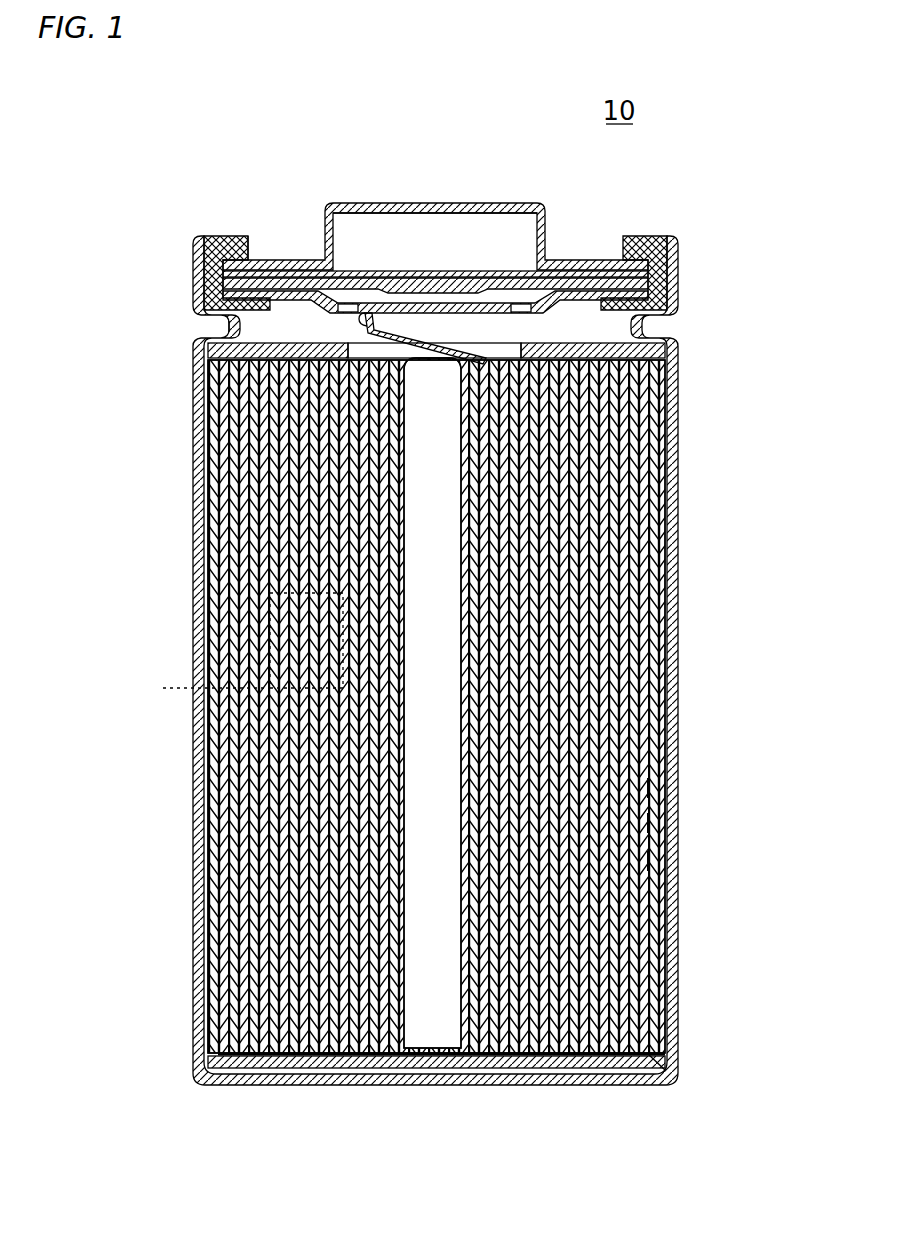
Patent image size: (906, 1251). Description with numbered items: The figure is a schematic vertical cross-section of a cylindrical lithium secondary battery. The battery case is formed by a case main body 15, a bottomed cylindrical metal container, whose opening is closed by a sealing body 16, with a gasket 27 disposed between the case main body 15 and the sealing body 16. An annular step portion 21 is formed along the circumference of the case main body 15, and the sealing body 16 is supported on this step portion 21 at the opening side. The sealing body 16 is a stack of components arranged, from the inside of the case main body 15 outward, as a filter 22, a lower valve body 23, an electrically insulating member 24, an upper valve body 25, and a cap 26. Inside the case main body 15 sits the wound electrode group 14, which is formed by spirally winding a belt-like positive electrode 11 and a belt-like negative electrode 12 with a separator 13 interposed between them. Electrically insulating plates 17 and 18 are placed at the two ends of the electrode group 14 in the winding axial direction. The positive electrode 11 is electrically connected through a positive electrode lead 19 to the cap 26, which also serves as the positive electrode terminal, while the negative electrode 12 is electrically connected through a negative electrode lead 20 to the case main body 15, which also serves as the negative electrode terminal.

The positive electrode 11 is at (640, 775).
The negative electrode 12 is at (640, 812).
The separator 13 is at (640, 850).
The electrode group 14 is at (472, 705).
The case main body 15 is at (666, 229).
The sealing body 16 is at (533, 194).
The electrically insulating plate 17 is at (655, 345).
The electrically insulating plate 18 is at (655, 1058).
The positive electrode lead 19 is at (352, 318).
The negative electrode lead 20 is at (205, 1050).
The step portion 21 is at (221, 327).
The filter 22 is at (418, 300).
The lower valve body 23 is at (320, 262).
The electrically insulating member 24 is at (270, 225).
The upper valve body 25 is at (352, 280).
The cap 26 is at (470, 196).
The gasket 27 is at (650, 256).